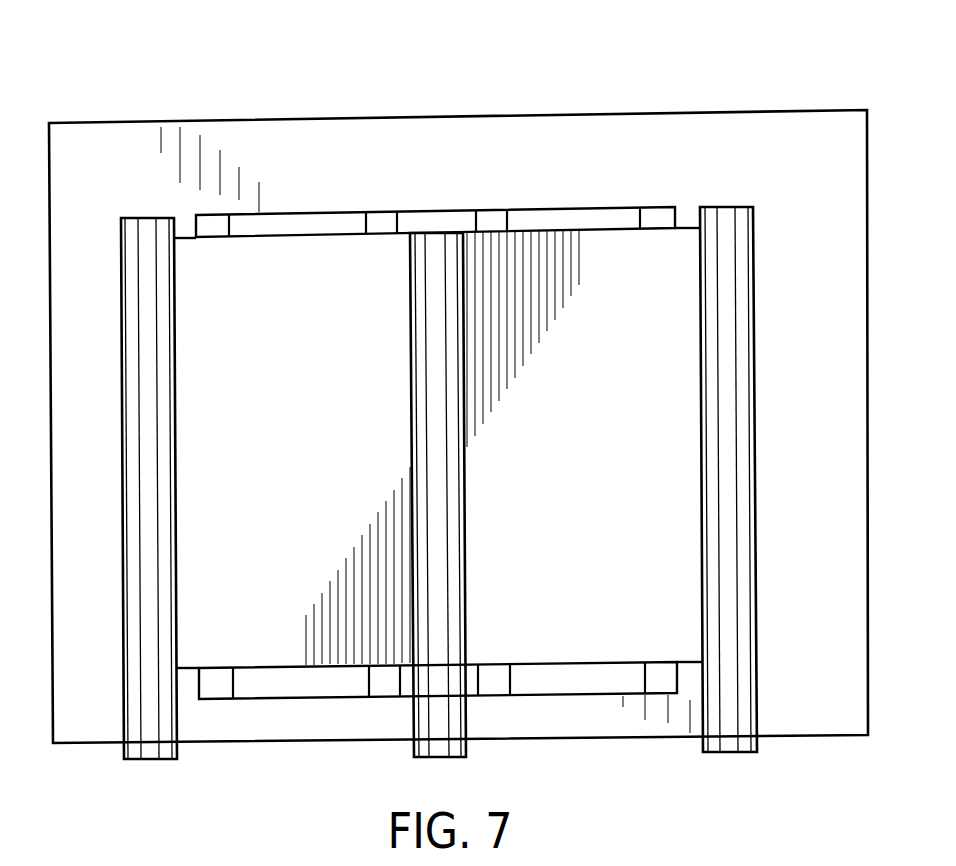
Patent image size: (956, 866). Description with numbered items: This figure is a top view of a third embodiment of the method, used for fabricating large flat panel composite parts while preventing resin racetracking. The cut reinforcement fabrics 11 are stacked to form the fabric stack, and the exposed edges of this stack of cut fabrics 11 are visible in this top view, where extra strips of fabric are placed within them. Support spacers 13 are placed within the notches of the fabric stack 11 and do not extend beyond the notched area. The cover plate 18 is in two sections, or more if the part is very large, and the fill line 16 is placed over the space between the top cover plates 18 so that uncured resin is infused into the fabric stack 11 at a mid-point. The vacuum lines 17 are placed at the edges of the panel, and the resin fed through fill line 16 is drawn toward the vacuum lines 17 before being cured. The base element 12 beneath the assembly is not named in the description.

The rail 11 is at (285, 227).
The base plate 12 is at (778, 708).
The rail segment 13 is at (230, 215).
The slider 16 is at (447, 247).
The support column 17 is at (140, 217).
The gap 18 is at (192, 258).